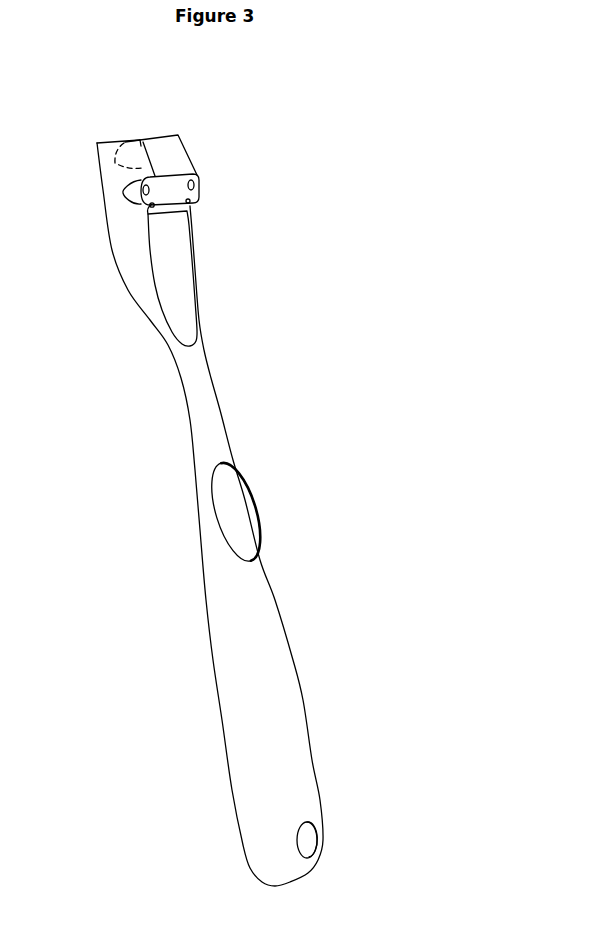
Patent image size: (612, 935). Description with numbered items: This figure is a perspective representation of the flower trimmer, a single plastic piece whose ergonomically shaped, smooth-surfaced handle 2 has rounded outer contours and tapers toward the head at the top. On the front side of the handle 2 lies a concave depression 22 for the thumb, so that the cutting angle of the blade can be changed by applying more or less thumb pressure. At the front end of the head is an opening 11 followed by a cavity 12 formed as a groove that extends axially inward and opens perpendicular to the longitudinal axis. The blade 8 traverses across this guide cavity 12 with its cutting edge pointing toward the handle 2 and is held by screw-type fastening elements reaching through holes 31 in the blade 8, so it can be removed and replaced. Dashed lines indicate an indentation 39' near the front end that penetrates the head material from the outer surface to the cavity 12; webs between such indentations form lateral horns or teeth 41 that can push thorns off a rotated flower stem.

The handle 2 is at (248, 815).
The blade 8 is at (173, 190).
The opening 11 is at (168, 130).
The cavity 12 is at (160, 148).
The concave depression 22 is at (232, 517).
The holes 31 is at (195, 184).
The indentation 39' is at (99, 135).
The teeth 41 is at (129, 145).